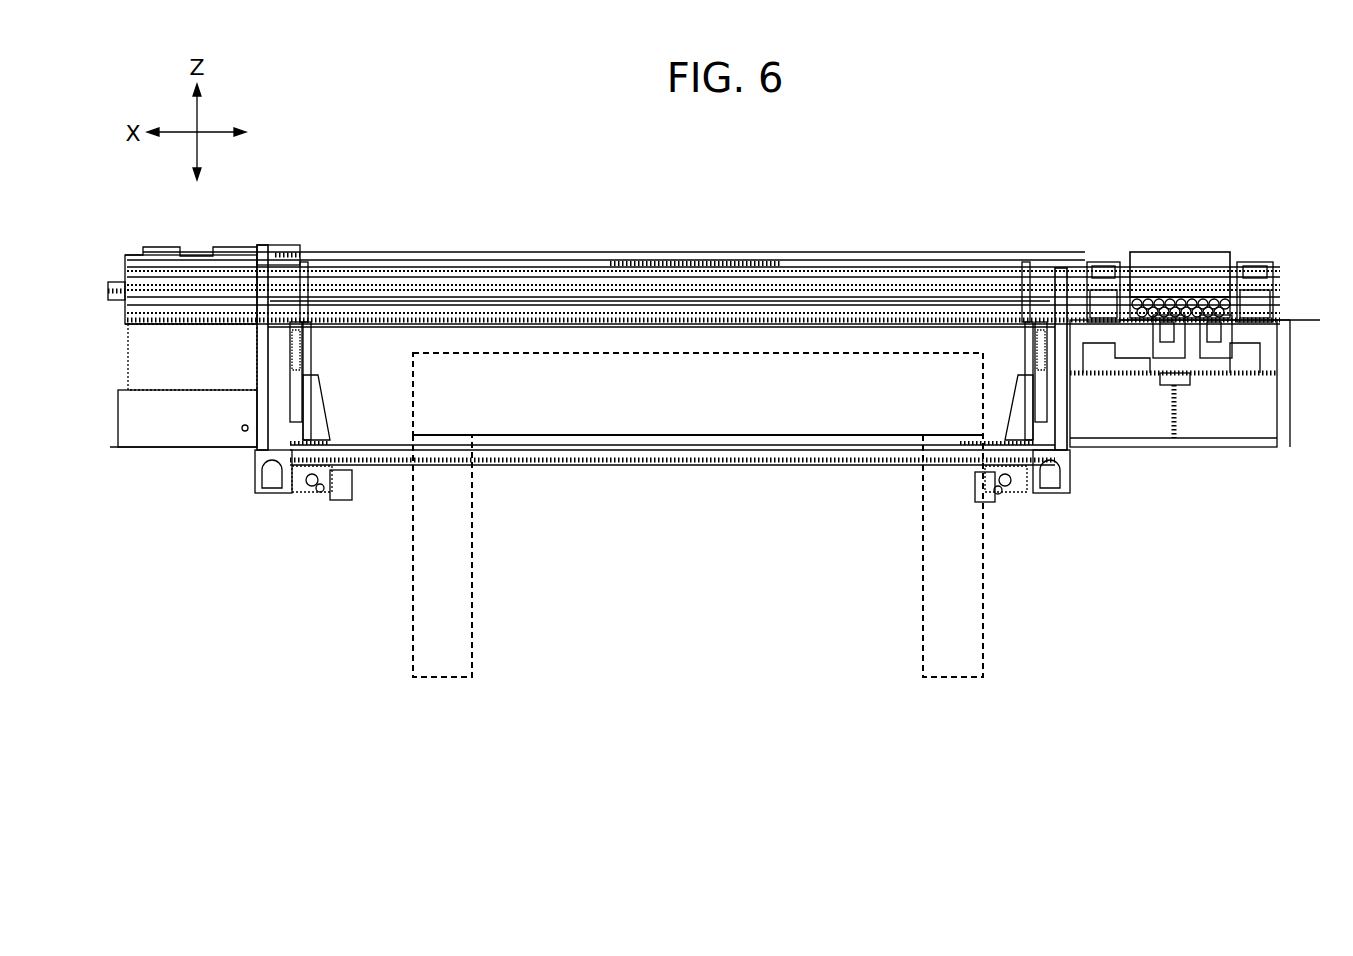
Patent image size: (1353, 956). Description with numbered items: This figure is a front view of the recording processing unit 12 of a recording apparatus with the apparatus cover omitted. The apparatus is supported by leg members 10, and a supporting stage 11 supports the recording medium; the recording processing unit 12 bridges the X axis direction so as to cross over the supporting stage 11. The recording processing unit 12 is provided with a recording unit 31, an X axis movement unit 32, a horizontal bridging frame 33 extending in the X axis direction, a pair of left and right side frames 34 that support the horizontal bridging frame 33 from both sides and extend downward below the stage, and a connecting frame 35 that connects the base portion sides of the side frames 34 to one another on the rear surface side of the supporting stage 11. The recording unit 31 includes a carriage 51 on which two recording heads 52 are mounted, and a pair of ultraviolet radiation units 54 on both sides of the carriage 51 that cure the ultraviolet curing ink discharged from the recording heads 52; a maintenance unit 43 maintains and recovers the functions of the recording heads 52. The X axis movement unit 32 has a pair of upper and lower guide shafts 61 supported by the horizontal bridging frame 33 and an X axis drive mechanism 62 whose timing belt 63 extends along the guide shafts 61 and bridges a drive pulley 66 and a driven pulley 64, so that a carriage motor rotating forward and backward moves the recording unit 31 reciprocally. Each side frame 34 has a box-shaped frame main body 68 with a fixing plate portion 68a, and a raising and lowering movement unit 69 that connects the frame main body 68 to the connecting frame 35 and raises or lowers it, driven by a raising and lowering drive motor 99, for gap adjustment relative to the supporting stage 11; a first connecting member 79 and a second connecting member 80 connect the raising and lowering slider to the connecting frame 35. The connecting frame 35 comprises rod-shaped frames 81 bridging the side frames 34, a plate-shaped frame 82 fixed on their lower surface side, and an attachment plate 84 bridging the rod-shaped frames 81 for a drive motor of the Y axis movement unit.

The leg member 10 is at (480, 557).
The supporting stage 11 is at (705, 462).
The recording processing unit 12 is at (1150, 142).
The recording unit 31 is at (1222, 210).
The X axis movement unit 32 is at (640, 236).
The horizontal bridging frame 33 is at (665, 325).
The side frame 34 is at (373, 563).
The connecting frame 35 is at (630, 488).
The maintenance unit 43 is at (1285, 345).
The carriage 51 is at (1175, 255).
The recording head 52 is at (1214, 335).
The ultraviolet radiation unit 54 is at (1108, 250).
The guide shaft 61 is at (415, 300).
The X axis drive mechanism 62 is at (142, 272).
The timing belt 63 is at (262, 250).
The driven pulley 64 is at (187, 290).
The drive pulley 66 is at (1282, 302).
The frame main body 68 is at (193, 462).
The fixing plate portion 68a is at (307, 330).
The raising and lowering movement unit 69 is at (347, 440).
The first connecting member 79 is at (305, 340).
The second connecting member 80 is at (345, 405).
The rod-shaped frame 81 is at (490, 445).
The plate-shaped frame 82 is at (525, 470).
The attachment plate 84 is at (790, 435).
The raising and lowering drive motor 99 is at (340, 500).